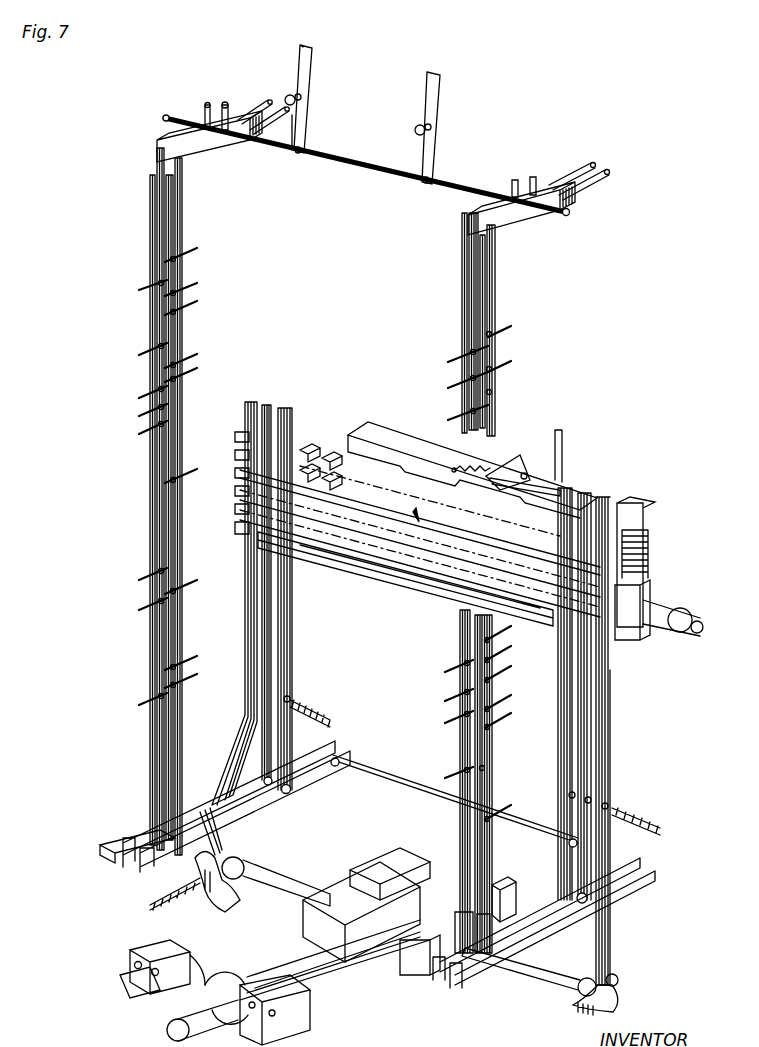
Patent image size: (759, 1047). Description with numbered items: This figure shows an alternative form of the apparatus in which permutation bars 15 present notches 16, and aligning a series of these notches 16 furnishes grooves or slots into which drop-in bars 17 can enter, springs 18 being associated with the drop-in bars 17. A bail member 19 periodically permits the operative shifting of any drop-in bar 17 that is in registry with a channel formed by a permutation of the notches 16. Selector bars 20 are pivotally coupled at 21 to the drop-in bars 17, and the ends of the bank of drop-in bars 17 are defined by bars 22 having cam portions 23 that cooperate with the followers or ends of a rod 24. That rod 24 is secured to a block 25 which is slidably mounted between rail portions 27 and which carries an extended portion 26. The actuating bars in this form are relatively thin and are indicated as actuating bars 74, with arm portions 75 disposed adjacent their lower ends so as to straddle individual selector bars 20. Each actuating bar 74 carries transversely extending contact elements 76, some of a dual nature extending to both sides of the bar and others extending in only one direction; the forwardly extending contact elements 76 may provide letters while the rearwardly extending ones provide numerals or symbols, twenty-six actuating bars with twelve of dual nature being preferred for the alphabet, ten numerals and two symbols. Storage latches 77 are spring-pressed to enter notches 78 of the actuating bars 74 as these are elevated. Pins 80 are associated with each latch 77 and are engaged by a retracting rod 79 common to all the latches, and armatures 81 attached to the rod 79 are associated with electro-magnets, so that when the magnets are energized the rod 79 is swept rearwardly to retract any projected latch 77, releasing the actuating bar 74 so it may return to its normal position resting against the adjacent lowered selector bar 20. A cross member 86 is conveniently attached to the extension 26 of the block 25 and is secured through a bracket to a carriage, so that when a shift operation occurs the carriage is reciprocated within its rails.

The permutation bars 15 is at (640, 535).
The notches 16 is at (320, 450).
The drop-in bars 17 is at (286, 402).
The springs 18 is at (320, 710).
The bail member 19 is at (416, 575).
The selector bars 20 is at (262, 805).
The pivotal coupling 21 is at (292, 792).
The bars 22 is at (245, 627).
The cam portions 23 is at (216, 862).
The rod 24 is at (532, 960).
The block 25 is at (372, 890).
The extended portion 26 is at (345, 972).
The rail portions 27 is at (396, 860).
The actuating bars 74 is at (149, 654).
The arm portions 75 is at (149, 821).
The contact elements 76 is at (147, 284).
The storage latches 77 is at (222, 110).
The notches 78 is at (154, 164).
The retracting rod 79 is at (355, 166).
The pins 80 is at (210, 108).
The armatures 81 is at (309, 68).
The cross member 86 is at (130, 962).